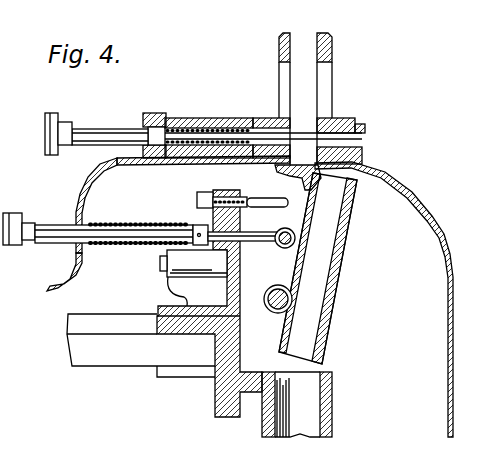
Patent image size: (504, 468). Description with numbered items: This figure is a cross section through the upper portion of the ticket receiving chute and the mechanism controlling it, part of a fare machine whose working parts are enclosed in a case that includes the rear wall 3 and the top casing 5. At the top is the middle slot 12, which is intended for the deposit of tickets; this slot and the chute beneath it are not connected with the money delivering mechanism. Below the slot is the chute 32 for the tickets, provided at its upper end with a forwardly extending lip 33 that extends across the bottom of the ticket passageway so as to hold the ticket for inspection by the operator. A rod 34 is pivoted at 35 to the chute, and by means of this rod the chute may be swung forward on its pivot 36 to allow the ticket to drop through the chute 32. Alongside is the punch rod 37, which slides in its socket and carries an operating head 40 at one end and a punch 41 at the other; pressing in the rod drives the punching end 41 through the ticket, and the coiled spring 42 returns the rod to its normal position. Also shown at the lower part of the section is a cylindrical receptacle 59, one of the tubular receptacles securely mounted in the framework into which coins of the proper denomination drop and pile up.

The rear wall 3 is at (456, 383).
The top casing 5 is at (76, 198).
The middle slot 12 is at (308, 44).
The chute 32 is at (351, 238).
The forwardly extending lip 33 is at (259, 186).
The rod 34 is at (132, 231).
The pivot 35 is at (285, 249).
The pivot 36 is at (274, 314).
The punch rod 37 is at (117, 129).
The operating head 40 is at (60, 136).
The punch 41 is at (277, 118).
The coiled spring 42 is at (205, 122).
The cylindrical receptacle 59 is at (332, 425).